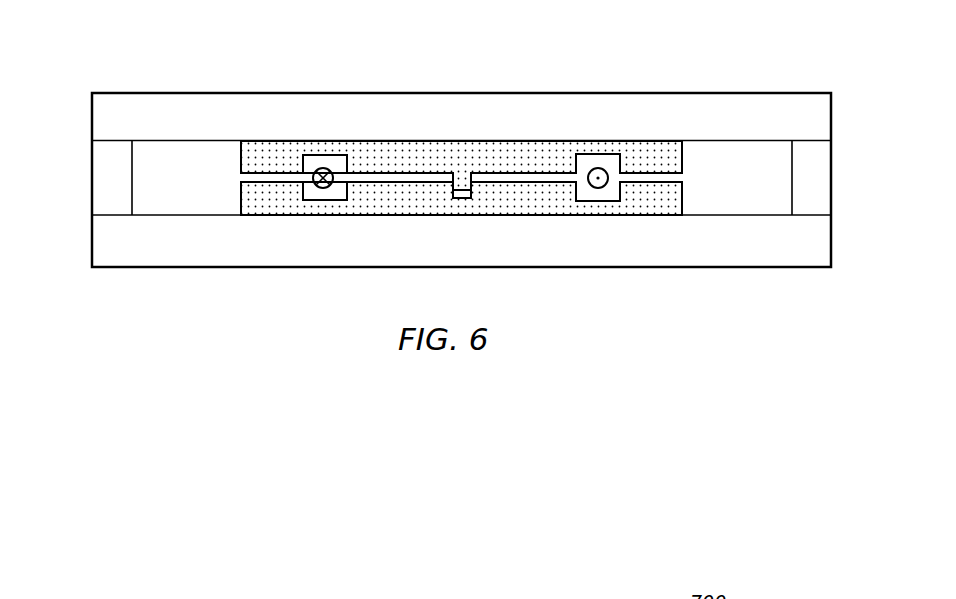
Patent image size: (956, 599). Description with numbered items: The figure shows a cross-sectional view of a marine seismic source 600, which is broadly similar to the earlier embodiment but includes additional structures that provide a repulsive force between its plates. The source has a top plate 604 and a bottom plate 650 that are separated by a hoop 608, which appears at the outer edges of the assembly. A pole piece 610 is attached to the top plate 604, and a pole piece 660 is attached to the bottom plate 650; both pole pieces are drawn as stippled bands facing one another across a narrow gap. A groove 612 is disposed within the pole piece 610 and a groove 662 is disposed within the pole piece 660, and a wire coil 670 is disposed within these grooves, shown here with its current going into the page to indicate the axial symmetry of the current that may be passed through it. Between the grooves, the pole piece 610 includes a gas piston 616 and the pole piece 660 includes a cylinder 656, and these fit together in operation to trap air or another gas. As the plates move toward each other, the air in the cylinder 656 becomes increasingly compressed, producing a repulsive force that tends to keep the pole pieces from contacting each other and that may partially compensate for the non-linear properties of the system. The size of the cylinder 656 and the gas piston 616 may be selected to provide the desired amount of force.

The marine seismic source 600 is at (652, 48).
The top plate 604 is at (761, 130).
The bottom plate 650 is at (761, 250).
The hoop 608 is at (100, 165).
The pole piece 610 is at (241, 152).
The pole piece 660 is at (241, 185).
The groove 612 is at (347, 157).
The groove 662 is at (347, 191).
The gas piston 616 is at (462, 181).
The cylinder 656 is at (470, 194).
The wire coil 670 is at (320, 188).